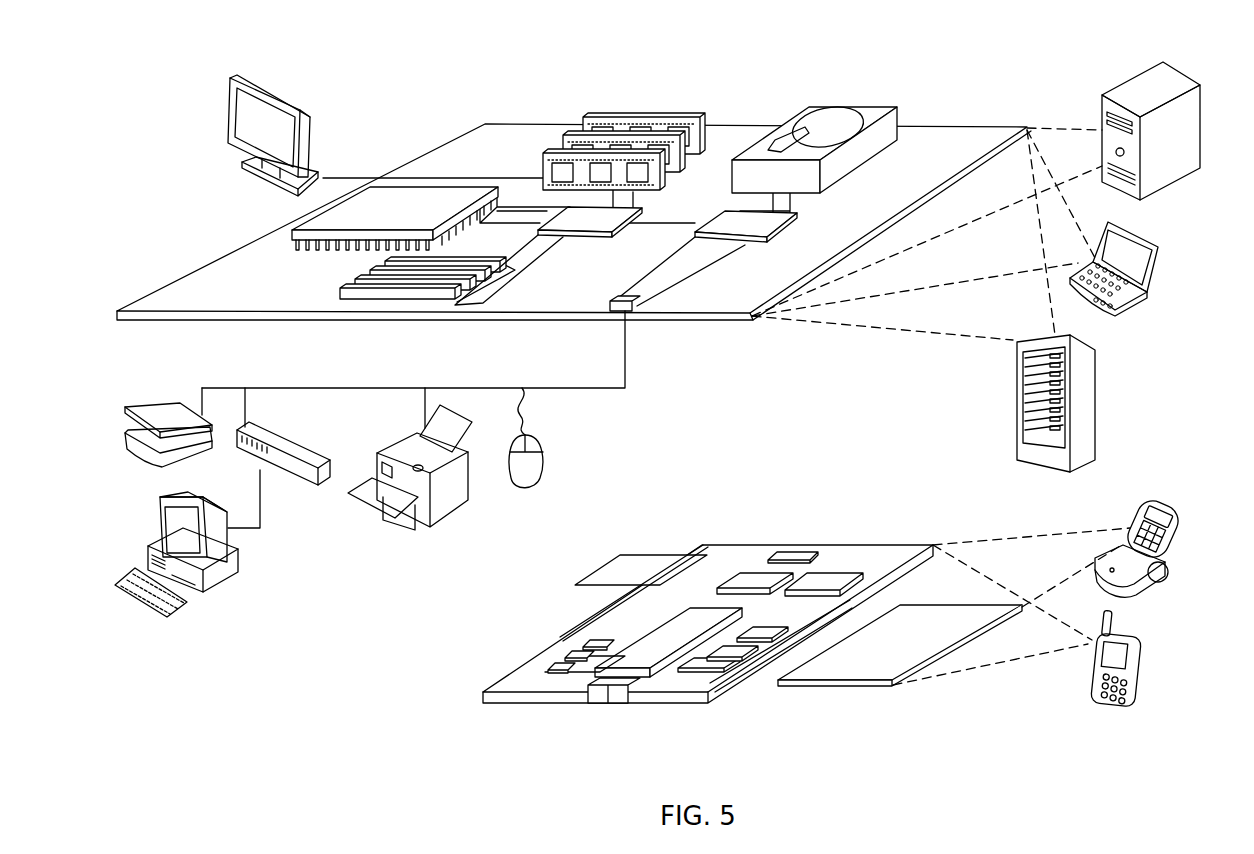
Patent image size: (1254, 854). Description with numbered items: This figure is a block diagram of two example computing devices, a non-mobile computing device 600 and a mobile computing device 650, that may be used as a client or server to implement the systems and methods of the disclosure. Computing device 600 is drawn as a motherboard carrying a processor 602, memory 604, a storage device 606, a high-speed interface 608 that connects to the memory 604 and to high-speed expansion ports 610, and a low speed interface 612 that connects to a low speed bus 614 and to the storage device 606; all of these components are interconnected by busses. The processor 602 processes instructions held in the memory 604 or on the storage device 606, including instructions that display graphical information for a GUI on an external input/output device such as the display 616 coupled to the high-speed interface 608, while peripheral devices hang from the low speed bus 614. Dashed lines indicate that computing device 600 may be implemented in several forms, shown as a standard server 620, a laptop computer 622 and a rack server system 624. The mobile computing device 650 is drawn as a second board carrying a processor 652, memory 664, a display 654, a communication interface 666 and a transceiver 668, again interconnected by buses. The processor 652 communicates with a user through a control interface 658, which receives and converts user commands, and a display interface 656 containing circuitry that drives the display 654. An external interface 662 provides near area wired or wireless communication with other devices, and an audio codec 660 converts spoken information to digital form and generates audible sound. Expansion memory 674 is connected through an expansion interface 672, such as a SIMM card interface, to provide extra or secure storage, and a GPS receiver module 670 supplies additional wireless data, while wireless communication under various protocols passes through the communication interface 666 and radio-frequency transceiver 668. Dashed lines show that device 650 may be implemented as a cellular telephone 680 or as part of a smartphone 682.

The computing device 600 is at (414, 103).
The processor 602 is at (292, 232).
The memory 604 is at (593, 118).
The storage device 606 is at (814, 108).
The high-speed interface 608 is at (570, 220).
The high-speed expansion ports 610 is at (347, 288).
The low speed interface 612 is at (727, 222).
The low speed bus 614 is at (632, 312).
The display 616 is at (237, 75).
The standard server 620 is at (1102, 108).
The laptop computer 622 is at (1160, 248).
The rack server system 624 is at (1017, 427).
The computing device 650 is at (461, 699).
The processor 652 is at (643, 665).
The display 654 is at (864, 681).
The display interface 656 is at (705, 668).
The control interface 658 is at (737, 652).
The audio codec 660 is at (763, 630).
The external interface 662 is at (610, 693).
The memory 664 is at (574, 661).
The communication interface 666 is at (753, 578).
The transceiver 668 is at (827, 577).
The GPS receiver module 670 is at (800, 552).
The expansion interface 672 is at (688, 556).
The expansion memory 674 is at (620, 556).
The cellular telephone 680 is at (1137, 502).
The smartphone 682 is at (1092, 668).